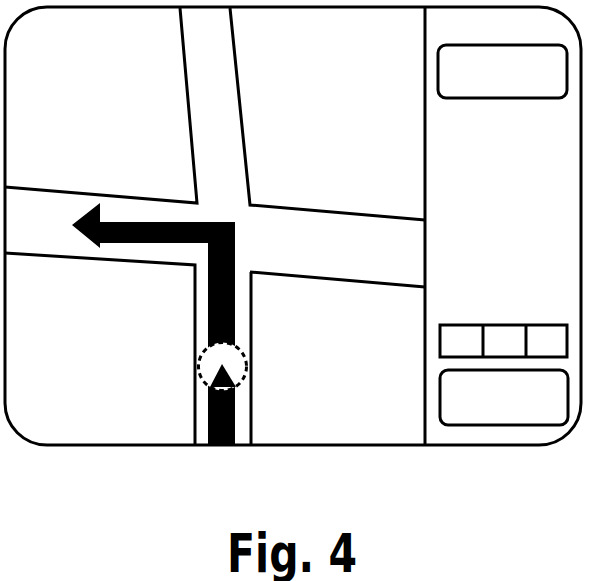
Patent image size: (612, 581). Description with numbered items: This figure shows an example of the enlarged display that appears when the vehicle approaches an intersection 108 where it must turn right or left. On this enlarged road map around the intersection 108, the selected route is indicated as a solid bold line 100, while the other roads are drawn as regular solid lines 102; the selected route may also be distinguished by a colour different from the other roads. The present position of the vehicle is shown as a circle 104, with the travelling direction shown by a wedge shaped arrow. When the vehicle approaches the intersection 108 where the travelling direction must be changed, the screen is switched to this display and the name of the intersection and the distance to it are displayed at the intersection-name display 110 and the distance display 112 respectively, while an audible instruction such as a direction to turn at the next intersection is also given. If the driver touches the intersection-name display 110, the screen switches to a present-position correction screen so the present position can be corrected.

The solid bold line 100 is at (242, 413).
The regular solid lines 102 is at (338, 245).
The circle 104 is at (197, 362).
The intersection 108 is at (213, 207).
The intersection-name display 110 is at (497, 98).
The distance display 112 is at (443, 322).